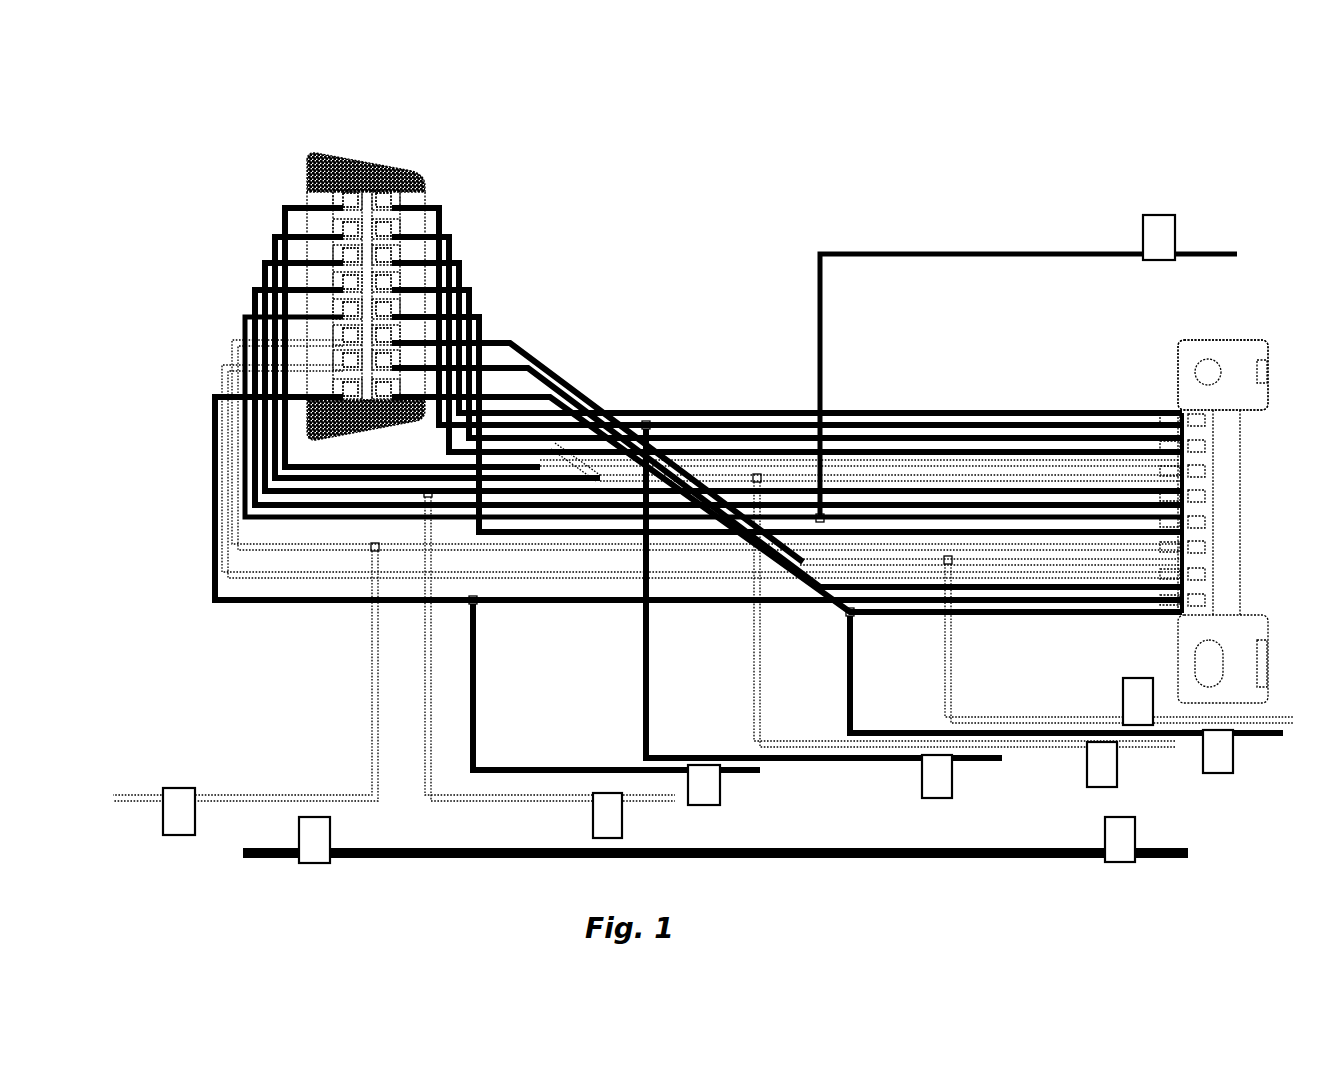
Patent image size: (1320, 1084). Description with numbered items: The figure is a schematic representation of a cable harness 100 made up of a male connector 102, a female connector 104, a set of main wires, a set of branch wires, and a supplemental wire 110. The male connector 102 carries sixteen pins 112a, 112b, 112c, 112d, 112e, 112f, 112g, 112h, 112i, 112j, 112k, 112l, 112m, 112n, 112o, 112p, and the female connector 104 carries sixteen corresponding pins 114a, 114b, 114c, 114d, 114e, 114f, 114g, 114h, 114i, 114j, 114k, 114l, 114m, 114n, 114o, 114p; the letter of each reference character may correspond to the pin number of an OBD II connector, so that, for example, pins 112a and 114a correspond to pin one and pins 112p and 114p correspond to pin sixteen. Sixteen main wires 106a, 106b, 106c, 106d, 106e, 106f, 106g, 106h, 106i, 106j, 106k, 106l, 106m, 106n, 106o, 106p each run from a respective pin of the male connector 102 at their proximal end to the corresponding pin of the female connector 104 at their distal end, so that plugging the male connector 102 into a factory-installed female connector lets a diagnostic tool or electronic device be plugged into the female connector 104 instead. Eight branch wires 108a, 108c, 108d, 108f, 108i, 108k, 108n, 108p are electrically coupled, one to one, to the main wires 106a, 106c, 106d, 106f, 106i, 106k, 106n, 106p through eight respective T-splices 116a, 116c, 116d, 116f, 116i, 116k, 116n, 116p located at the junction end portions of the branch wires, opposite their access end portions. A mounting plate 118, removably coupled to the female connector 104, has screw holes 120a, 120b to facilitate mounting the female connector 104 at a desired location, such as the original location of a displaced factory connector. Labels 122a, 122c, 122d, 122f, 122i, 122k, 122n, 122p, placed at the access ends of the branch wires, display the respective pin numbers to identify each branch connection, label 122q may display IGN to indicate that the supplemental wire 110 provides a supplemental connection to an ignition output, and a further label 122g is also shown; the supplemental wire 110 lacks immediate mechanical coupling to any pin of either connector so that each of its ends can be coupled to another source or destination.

The cable harness 100 is at (1113, 103).
The male connector 102 is at (480, 163).
The female connector 104 is at (1233, 331).
The main wire 106a is at (215, 400).
The main wire 106b is at (228, 368).
The main wire 106c is at (238, 343).
The main wire 106d is at (246, 317).
The main wire 106e is at (256, 290).
The main wire 106f is at (266, 263).
The main wire 106g is at (276, 237).
The main wire 106h is at (286, 208).
The main wire 106i is at (552, 400).
The main wire 106j is at (496, 372).
The main wire 106k is at (490, 344).
The main wire 106l is at (482, 317).
The main wire 106m is at (472, 290).
The main wire 106n is at (462, 263).
The main wire 106o is at (452, 237).
The main wire 106p is at (442, 208).
The branch wire 108a is at (477, 716).
The branch wire 108c is at (372, 652).
The branch wire 108d is at (822, 284).
The branch wire 108f is at (431, 800).
The branch wire 108i is at (854, 698).
The branch wire 108k is at (952, 678).
The branch wire 108n is at (760, 668).
The branch wire 108p is at (650, 720).
The supplemental wire 110 is at (815, 850).
The pin 112a is at (343, 386).
The pin 112b is at (343, 357).
The pin 112c is at (343, 332).
The pin 112d is at (343, 306).
The pin 112e is at (343, 279).
The pin 112f is at (343, 252).
The pin 112g is at (343, 225).
The pin 112h is at (343, 196).
The pin 112i is at (392, 386).
The pin 112j is at (392, 357).
The pin 112k is at (392, 332).
The pin 112l is at (392, 306).
The pin 112m is at (392, 279).
The pin 112n is at (392, 252).
The pin 112o is at (392, 226).
The pin 112p is at (392, 196).
The pin 114a is at (1207, 600).
The pin 114b is at (1207, 574).
The pin 114c is at (1207, 547).
The pin 114d is at (1207, 522).
The pin 114e is at (1207, 496).
The pin 114f is at (1207, 471).
The pin 114g is at (1207, 446).
The pin 114h is at (1207, 420).
The pin 114i is at (1170, 600).
The pin 114j is at (1170, 574).
The pin 114k is at (1170, 547).
The pin 114l is at (1170, 522).
The pin 114m is at (1170, 496).
The pin 114n is at (1170, 471).
The pin 114o is at (1170, 446).
The pin 114p is at (1172, 420).
The T-splice 116a is at (476, 604).
The T-splice 116c is at (372, 550).
The T-splice 116d is at (818, 514).
The T-splice 116f is at (434, 498).
The T-splice 116i is at (856, 616).
The T-splice 116k is at (952, 565).
The T-splice 116n is at (757, 484).
The T-splice 116p is at (650, 421).
The mounting plate 118 is at (1210, 340).
The screw hole 120a is at (1200, 362).
The screw hole 120b is at (1205, 664).
The label 122a is at (712, 782).
The label 122c is at (180, 792).
The label 122d is at (1150, 236).
The label 122f is at (612, 812).
The label 122g is at (310, 830).
The label 122i is at (1222, 748).
The label 122k is at (1130, 694).
The label 122n is at (1106, 758).
The label 122p is at (940, 768).
The label 122q is at (1118, 832).